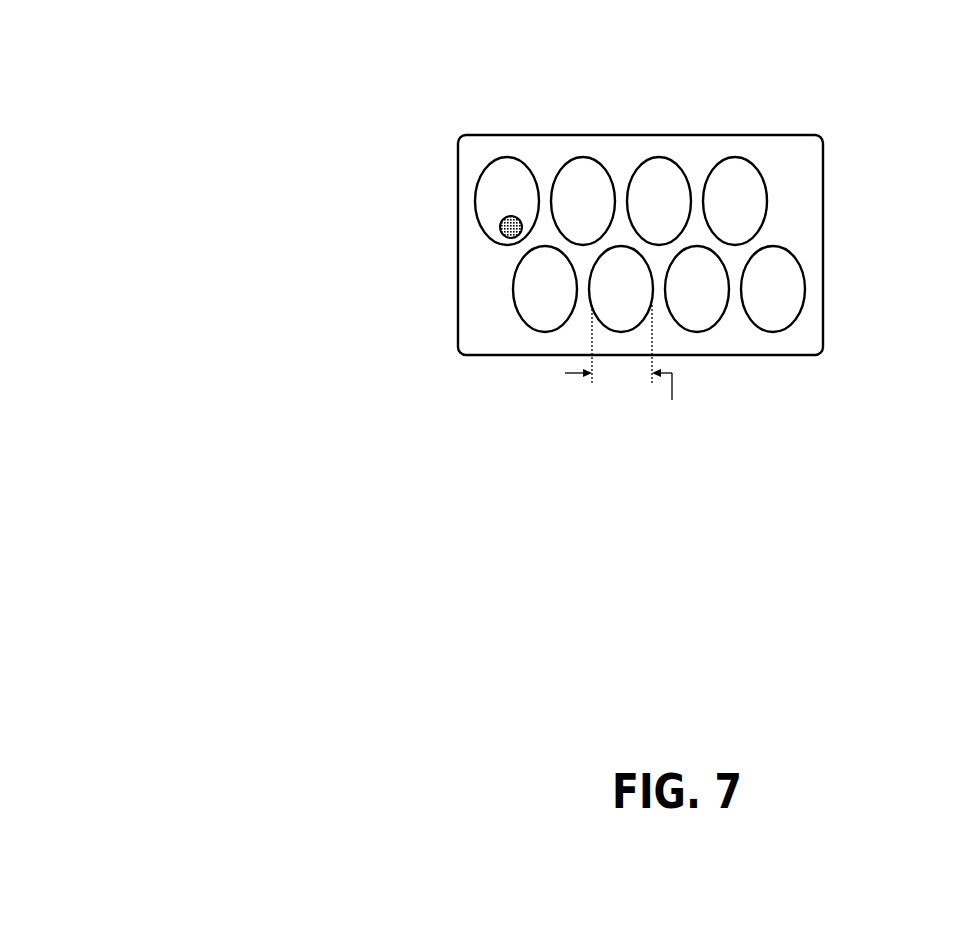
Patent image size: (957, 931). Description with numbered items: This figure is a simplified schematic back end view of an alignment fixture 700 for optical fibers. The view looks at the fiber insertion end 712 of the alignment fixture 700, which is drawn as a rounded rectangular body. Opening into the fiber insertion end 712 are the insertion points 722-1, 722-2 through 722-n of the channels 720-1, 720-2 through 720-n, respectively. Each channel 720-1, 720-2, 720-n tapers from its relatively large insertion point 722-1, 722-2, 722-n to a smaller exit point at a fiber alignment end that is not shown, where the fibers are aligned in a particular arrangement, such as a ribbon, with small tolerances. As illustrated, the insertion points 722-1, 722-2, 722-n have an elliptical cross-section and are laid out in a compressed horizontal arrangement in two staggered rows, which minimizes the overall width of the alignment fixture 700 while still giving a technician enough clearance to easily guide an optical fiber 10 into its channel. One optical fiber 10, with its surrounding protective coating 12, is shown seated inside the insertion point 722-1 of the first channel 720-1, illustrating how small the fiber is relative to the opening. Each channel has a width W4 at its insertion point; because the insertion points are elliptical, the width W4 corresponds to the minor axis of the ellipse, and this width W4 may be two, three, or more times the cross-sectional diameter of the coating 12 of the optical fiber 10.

The alignment fixture 700 is at (278, 201).
The fiber insertion end 712 is at (795, 172).
The channel 720-1 is at (478, 207).
The channel 720-2 is at (528, 300).
The channel 720-n is at (798, 320).
The insertion point 722-1 is at (495, 173).
The insertion point 722-2 is at (548, 302).
The insertion point 722-n is at (778, 320).
The optical fiber 10 is at (524, 206).
The protective coating 12 is at (512, 216).
The width W4 is at (621, 364).